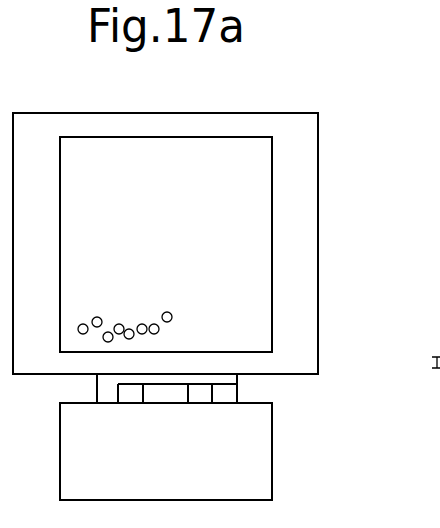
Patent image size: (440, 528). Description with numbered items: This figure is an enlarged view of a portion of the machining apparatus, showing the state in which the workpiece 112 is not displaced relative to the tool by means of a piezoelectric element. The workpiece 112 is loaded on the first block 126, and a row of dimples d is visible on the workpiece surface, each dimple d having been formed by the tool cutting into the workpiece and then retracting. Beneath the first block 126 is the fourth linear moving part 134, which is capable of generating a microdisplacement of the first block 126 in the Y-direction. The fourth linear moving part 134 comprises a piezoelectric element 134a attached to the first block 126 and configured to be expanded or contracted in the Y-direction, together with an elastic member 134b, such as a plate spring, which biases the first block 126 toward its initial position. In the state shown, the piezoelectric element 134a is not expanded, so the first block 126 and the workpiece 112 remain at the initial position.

The workpiece 112 is at (252, 182).
The first block 126 is at (298, 228).
The dimple d is at (172, 316).
The fourth linear moving part 134 is at (257, 456).
The piezoelectric element 134a is at (173, 398).
The elastic member 134b is at (227, 399).